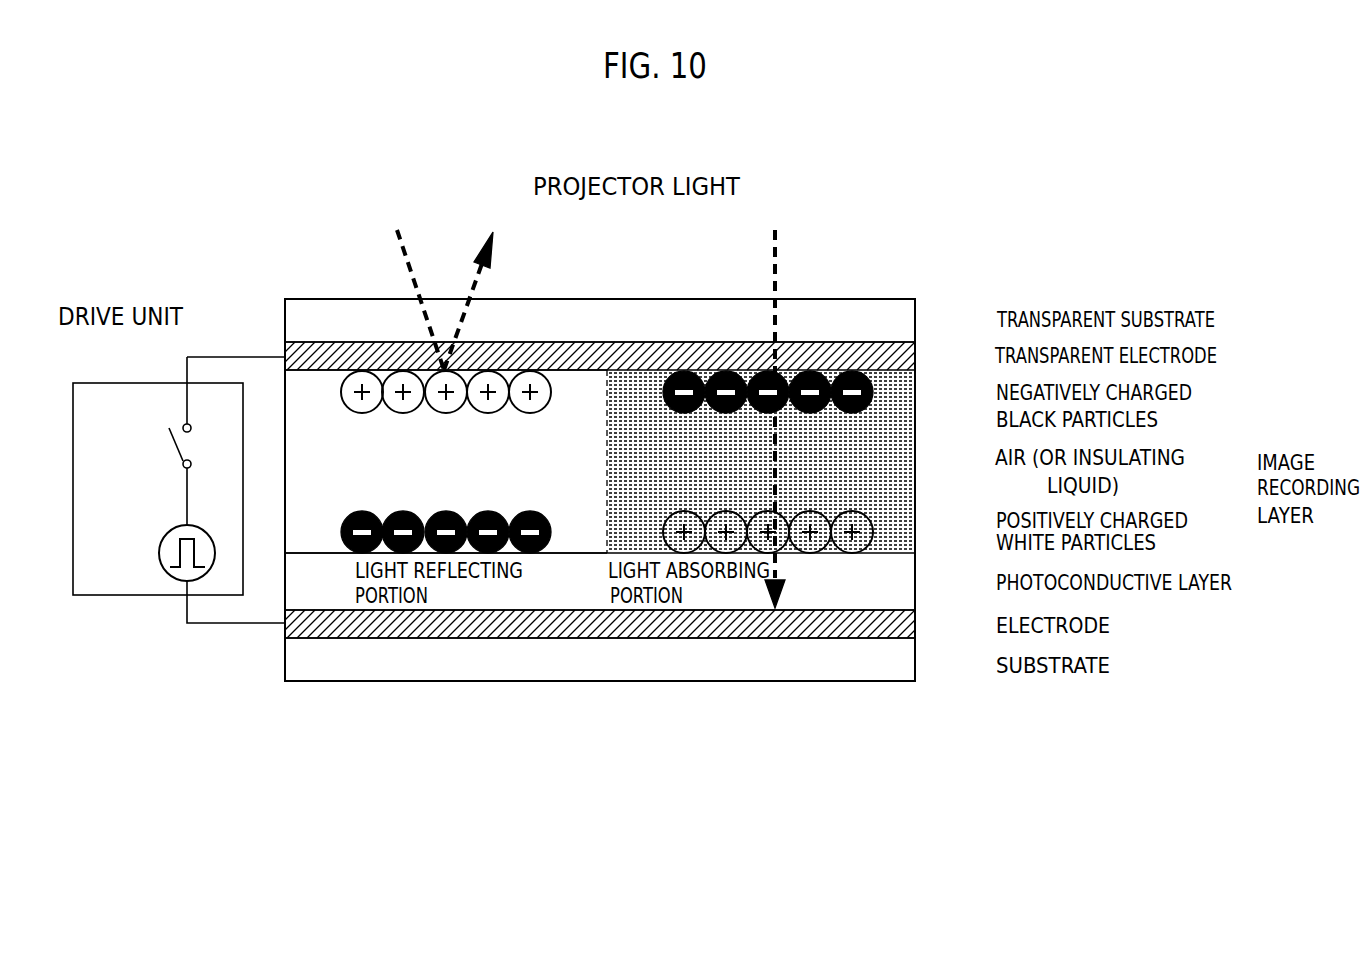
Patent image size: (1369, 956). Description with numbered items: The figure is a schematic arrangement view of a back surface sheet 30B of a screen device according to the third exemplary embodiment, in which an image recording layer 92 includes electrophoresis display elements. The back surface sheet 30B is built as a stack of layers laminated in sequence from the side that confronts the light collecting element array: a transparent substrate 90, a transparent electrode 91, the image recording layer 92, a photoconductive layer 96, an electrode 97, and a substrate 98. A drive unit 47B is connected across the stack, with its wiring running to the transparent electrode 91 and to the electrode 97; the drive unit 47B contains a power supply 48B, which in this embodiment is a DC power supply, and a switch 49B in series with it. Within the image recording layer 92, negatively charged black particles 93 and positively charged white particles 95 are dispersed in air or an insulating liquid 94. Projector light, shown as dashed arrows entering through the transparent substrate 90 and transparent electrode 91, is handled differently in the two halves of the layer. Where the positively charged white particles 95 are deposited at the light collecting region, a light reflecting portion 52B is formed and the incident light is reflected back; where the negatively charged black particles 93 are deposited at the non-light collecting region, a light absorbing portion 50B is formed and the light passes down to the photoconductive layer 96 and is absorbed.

The back surface sheet 30B is at (908, 259).
The drive unit 47B is at (155, 383).
The power supply 48B is at (158, 553).
The switch 49B is at (158, 440).
The light absorbing portion 50B is at (628, 525).
The light reflecting portion 52B is at (320, 513).
The transparent substrate 90 is at (915, 314).
The transparent electrode 91 is at (915, 355).
The image recording layer 92 is at (1193, 373).
The negatively charged black particles 93 is at (873, 392).
The air or insulating liquid 94 is at (875, 455).
The positively charged white particles 95 is at (875, 526).
The photoconductive layer 96 is at (915, 576).
The electrode 97 is at (915, 618).
The substrate 98 is at (915, 660).